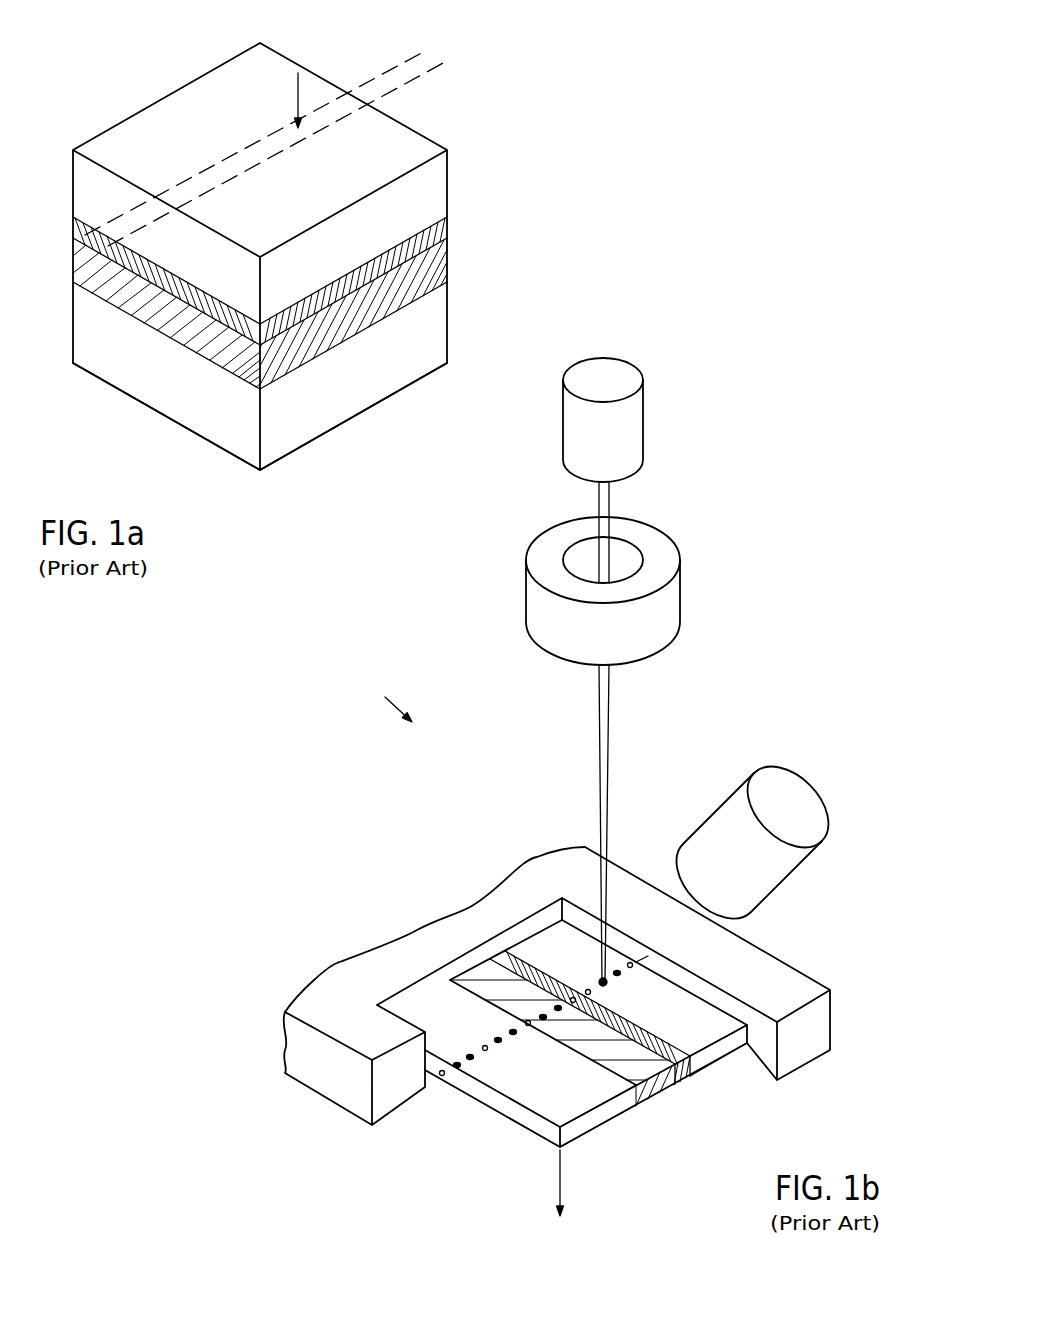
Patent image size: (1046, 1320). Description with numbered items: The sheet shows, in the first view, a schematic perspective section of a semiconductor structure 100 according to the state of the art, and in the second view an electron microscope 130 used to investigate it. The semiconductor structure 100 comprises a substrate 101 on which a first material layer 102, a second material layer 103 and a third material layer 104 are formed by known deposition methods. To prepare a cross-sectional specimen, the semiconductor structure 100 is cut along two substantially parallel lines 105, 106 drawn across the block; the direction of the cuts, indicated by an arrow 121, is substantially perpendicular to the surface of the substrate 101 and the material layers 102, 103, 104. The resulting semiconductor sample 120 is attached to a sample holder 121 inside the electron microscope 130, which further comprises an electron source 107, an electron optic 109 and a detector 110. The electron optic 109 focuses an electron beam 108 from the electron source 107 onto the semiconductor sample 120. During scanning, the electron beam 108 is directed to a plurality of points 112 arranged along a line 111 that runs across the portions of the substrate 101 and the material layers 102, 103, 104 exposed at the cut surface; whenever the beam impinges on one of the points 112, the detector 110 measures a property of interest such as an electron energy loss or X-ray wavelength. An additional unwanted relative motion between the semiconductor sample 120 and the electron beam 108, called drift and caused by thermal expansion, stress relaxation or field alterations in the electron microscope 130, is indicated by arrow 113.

In FIG. 1a, the semiconductor structure 100 is at (96, 54).
In FIG. 1a, the substrate 101 is at (447, 316).
In FIG. 1b, the substrate 101 is at (597, 1122).
In FIG. 1a, the first material layer 102 is at (447, 255).
In FIG. 1b, the first material layer 102 is at (640, 1088).
In FIG. 1a, the second material layer 103 is at (447, 222).
In FIG. 1b, the second material layer 103 is at (677, 1065).
In FIG. 1a, the third material layer 104 is at (447, 178).
In FIG. 1b, the third material layer 104 is at (721, 1055).
In FIG. 1a, the line 105 is at (400, 67).
In FIG. 1a, the line 106 is at (417, 77).
In FIG. 1b, the electron source 107 is at (635, 422).
In FIG. 1b, the electron beam 108 is at (612, 495).
In FIG. 1b, the electron optic 109 is at (678, 588).
In FIG. 1b, the detector 110 is at (790, 867).
In FIG. 1b, the line 111 is at (648, 957).
In FIG. 1b, the points 112 is at (487, 1064).
In FIG. 1b, the arrow 113 is at (558, 1190).
In FIG. 1b, the semiconductor sample 120 is at (487, 1130).
In FIG. 1a, the arrow / sample holder 121 is at (314, 71).
In FIG. 1b, the arrow / sample holder 121 is at (833, 1020).
In FIG. 1b, the electron microscope 130 is at (381, 693).